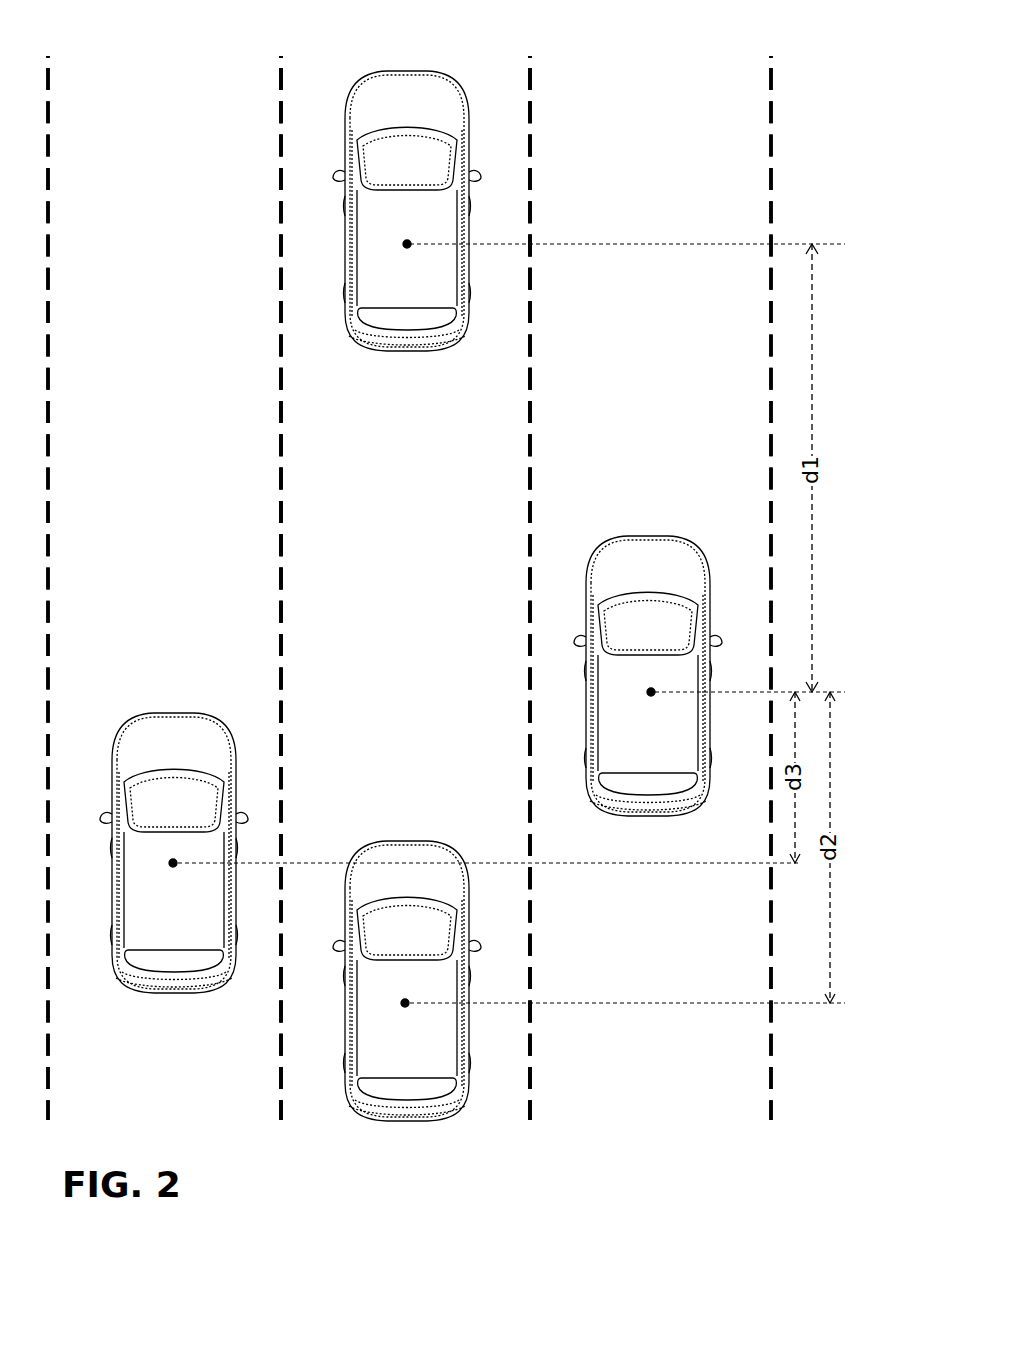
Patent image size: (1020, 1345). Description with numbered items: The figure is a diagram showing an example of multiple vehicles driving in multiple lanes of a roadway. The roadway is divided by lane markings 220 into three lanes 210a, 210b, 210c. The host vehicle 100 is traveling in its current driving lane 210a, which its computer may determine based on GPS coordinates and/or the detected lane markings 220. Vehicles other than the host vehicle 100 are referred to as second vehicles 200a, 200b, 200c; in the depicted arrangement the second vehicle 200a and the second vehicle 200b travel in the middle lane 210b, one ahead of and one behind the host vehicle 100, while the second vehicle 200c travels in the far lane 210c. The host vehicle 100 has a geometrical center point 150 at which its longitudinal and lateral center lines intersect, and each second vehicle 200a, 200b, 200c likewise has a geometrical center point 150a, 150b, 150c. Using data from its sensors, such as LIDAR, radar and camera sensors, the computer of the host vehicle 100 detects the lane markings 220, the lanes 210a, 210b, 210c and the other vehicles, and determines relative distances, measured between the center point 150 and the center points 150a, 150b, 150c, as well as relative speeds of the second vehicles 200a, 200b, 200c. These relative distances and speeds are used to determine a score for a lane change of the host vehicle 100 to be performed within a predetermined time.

The host vehicle 100 is at (738, 20).
The geometrical center point 150 is at (649, 691).
The geometrical center point 150a is at (405, 243).
The geometrical center point 150b is at (407, 1004).
The geometrical center point 150c is at (175, 862).
The second vehicle 200a is at (407, 211).
The second vehicle 200b is at (407, 981).
The second vehicle 200c is at (174, 853).
The lane 210a is at (650, 588).
The lane 210b is at (405, 588).
The lane 210c is at (164, 588).
The lane marking 220 is at (768, 337).